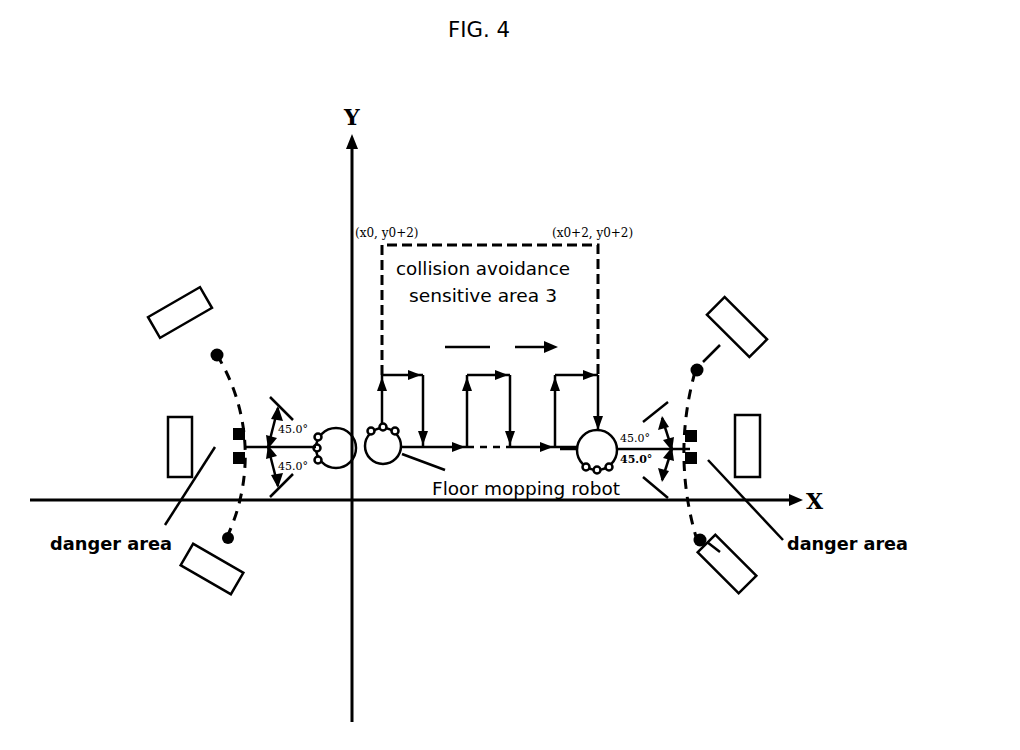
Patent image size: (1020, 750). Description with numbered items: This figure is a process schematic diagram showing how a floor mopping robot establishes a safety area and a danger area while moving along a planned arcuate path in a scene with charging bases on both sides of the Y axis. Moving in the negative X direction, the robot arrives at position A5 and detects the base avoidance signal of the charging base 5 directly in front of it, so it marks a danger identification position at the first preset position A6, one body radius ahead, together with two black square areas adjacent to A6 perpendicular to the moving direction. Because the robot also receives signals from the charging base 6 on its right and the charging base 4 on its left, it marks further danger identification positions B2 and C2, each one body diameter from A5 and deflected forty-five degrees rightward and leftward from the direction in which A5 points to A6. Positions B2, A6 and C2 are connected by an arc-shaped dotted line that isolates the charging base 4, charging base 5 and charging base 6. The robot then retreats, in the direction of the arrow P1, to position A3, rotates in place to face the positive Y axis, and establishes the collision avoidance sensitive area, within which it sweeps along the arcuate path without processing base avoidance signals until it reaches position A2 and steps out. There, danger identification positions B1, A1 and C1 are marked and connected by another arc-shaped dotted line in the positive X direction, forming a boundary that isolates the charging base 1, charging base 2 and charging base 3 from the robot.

The charging base 1 is at (743, 440).
The charging base 2 is at (747, 293).
The charging base 3 is at (757, 595).
The charging base 4 is at (203, 580).
The charging base 5 is at (182, 417).
The charging base 6 is at (210, 272).
The danger identification position A1 is at (698, 447).
The position A2 is at (597, 452).
The position A3 is at (383, 444).
The position A5 is at (335, 448).
The first preset position A6 is at (236, 446).
The danger identification position B1 is at (693, 367).
The danger identification position B2 is at (210, 352).
The danger identification position C1 is at (688, 544).
The danger identification position C2 is at (237, 539).
The arrow P1 is at (501, 347).